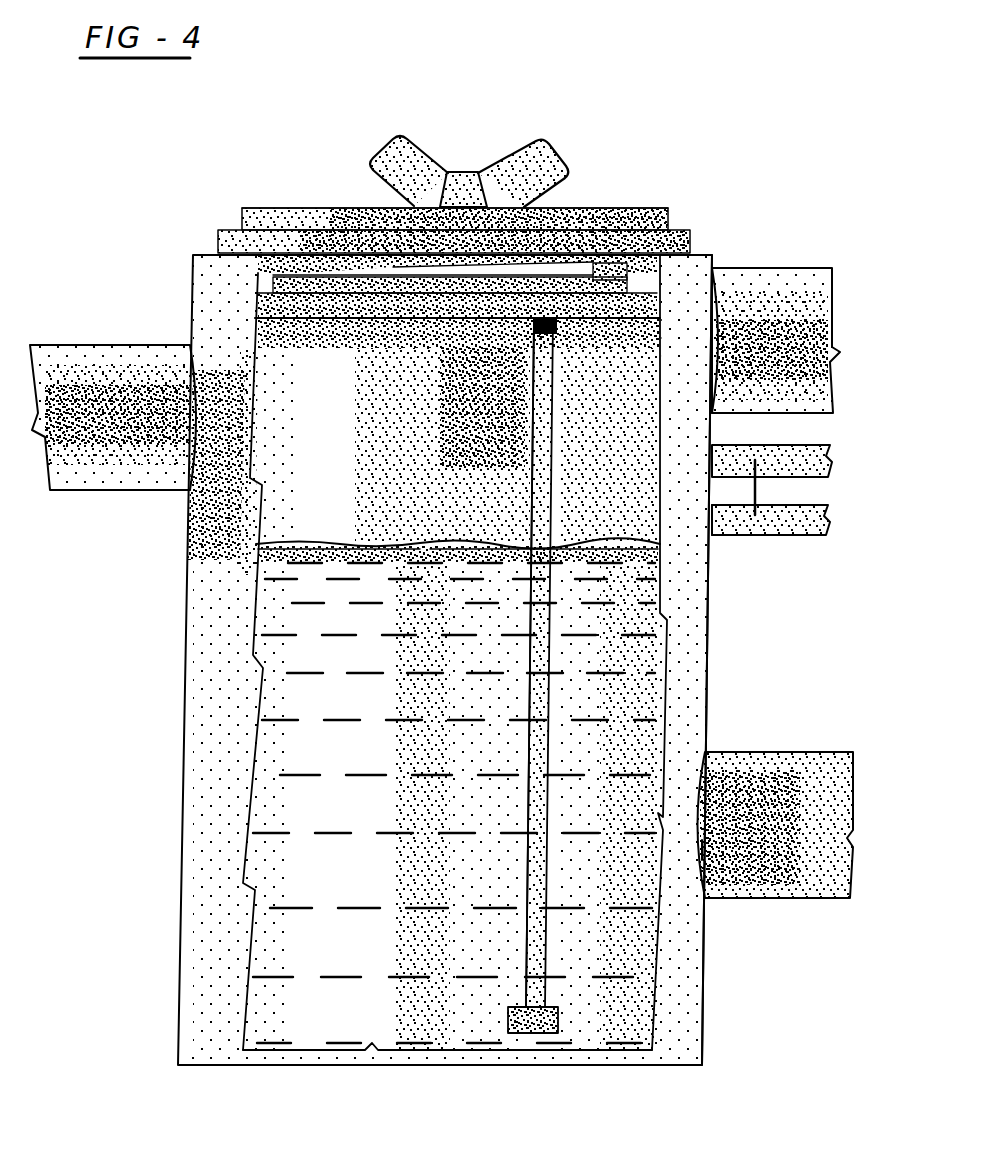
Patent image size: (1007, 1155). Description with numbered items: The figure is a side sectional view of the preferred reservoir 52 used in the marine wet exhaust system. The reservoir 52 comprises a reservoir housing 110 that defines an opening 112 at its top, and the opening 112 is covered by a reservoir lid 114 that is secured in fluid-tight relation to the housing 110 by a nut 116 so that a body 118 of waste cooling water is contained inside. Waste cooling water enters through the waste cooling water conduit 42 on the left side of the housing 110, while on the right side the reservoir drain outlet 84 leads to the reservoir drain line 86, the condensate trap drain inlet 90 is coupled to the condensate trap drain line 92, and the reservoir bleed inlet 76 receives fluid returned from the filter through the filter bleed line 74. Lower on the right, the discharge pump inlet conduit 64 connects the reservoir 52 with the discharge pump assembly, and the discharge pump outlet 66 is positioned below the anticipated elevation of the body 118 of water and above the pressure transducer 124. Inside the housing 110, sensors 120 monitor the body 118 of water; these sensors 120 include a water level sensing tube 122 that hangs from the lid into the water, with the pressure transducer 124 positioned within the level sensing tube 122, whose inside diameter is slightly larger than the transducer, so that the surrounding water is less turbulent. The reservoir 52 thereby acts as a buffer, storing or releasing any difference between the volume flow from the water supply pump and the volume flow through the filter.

The waste cooling water conduit 42 is at (110, 345).
The reservoir 52 is at (292, 206).
The discharge pump inlet conduit 64 is at (768, 752).
The discharge pump outlet 66 is at (693, 846).
The filter bleed line 74 is at (794, 518).
The reservoir bleed inlet 76 is at (708, 522).
The reservoir drain outlet 84 is at (702, 342).
The reservoir drain line 86 is at (755, 268).
The condensate trap drain inlet 90 is at (755, 515).
The condensate trap drain line 92 is at (708, 462).
The reservoir housing 110 is at (200, 745).
The opening 112 is at (263, 273).
The reservoir lid 114 is at (600, 215).
The nut 116 is at (520, 165).
The body of waste cooling water 118 is at (352, 541).
The sensors 120 is at (555, 855).
The water level sensing tube 122 is at (552, 713).
The pressure transducer 124 is at (553, 1013).